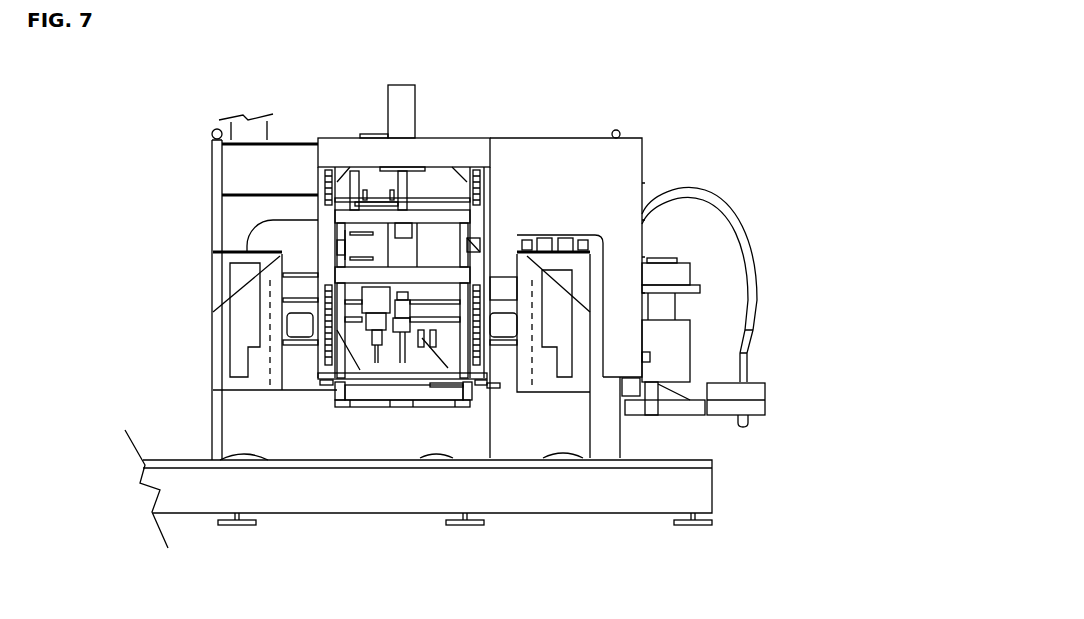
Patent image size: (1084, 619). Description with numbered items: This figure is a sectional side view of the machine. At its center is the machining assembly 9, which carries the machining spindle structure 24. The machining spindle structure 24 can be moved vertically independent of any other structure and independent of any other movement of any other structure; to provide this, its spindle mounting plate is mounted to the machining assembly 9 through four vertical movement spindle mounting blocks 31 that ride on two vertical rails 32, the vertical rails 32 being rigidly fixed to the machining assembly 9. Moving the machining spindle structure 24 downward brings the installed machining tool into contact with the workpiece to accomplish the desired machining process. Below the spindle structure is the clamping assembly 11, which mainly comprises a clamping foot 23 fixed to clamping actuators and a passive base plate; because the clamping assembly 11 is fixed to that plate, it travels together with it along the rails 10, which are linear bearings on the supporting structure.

The machining assembly 9 is at (425, 152).
The rails 10 is at (333, 392).
The clamping assembly 11 is at (333, 425).
The clamping foot 23 is at (432, 405).
The machining spindle structure 24 is at (385, 318).
The vertical movement spindle mounting blocks 31 is at (323, 267).
The vertical rails 32 is at (328, 192).